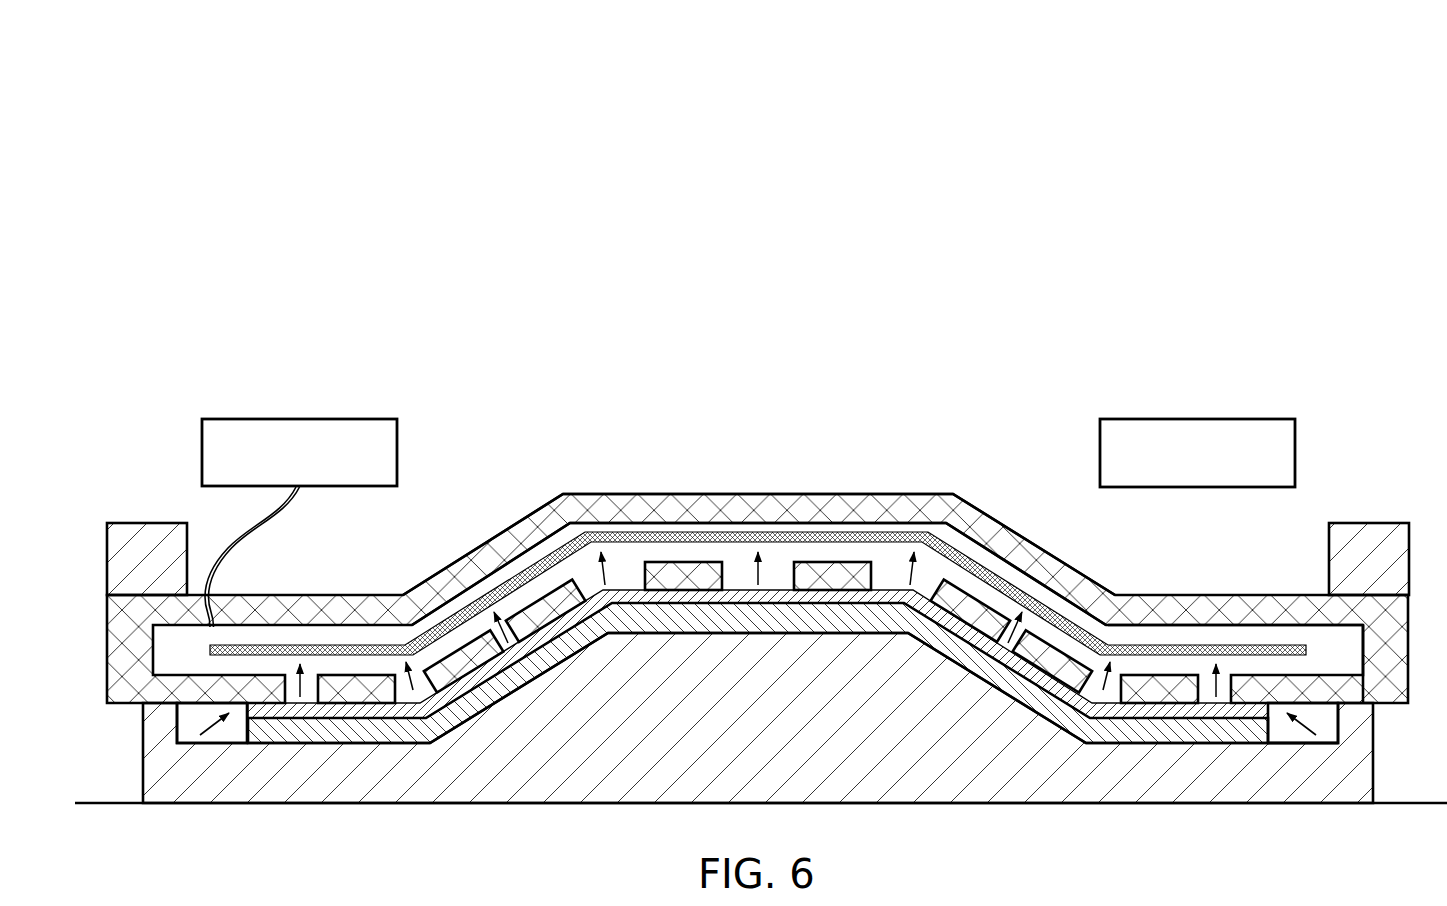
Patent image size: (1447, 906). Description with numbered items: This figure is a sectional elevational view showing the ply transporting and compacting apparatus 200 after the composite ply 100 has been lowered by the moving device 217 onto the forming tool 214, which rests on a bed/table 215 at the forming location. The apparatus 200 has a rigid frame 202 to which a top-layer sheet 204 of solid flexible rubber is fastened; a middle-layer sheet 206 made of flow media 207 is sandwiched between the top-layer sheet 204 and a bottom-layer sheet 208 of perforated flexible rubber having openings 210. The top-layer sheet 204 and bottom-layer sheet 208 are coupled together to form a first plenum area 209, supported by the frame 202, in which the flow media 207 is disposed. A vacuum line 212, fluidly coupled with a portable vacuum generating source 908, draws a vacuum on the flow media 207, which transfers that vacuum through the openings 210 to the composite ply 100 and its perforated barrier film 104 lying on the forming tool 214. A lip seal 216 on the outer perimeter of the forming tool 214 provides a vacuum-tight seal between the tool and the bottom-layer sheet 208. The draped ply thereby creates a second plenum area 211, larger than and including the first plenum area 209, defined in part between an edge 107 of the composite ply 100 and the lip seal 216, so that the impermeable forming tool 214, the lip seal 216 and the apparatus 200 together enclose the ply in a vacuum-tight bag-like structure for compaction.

The ply transporting and compacting apparatus 200 is at (288, 126).
The rigid frame 202 is at (145, 525).
The top-layer sheet 204 is at (757, 494).
The middle-layer sheet 206 is at (787, 541).
The flow media 207 is at (1168, 642).
The bottom-layer sheet 208 is at (125, 699).
The first plenum area 209 is at (1336, 636).
The openings 210 is at (398, 696).
The second plenum area 211 is at (1340, 655).
The vacuum line 212 is at (270, 529).
The forming tool 214 is at (470, 804).
The bed/table 215 is at (1400, 804).
The lip seal 216 is at (163, 731).
The moving device 217 is at (1295, 450).
The portable vacuum generating source 908 is at (397, 452).
The composite ply 100 is at (1138, 736).
The perforated barrier film 104 is at (1205, 711).
The edge 107 is at (1285, 736).